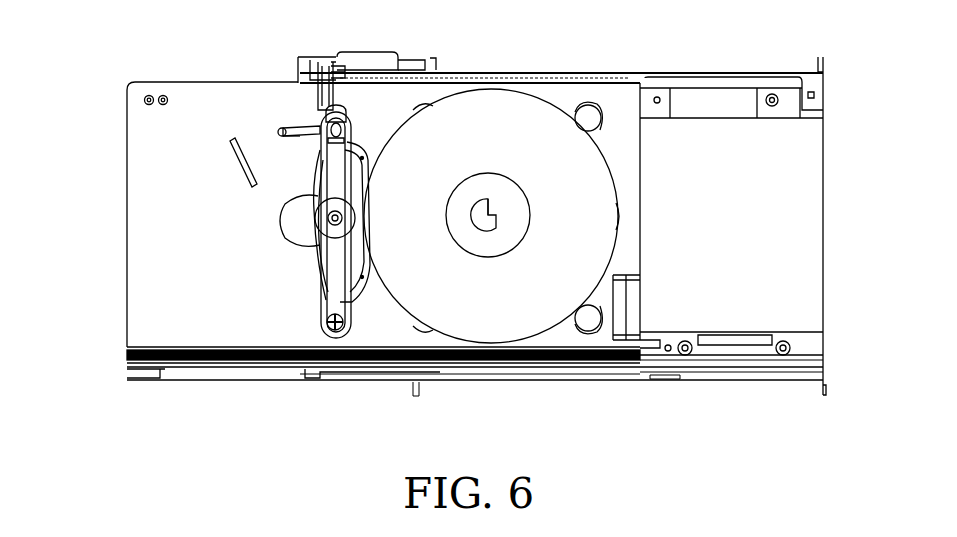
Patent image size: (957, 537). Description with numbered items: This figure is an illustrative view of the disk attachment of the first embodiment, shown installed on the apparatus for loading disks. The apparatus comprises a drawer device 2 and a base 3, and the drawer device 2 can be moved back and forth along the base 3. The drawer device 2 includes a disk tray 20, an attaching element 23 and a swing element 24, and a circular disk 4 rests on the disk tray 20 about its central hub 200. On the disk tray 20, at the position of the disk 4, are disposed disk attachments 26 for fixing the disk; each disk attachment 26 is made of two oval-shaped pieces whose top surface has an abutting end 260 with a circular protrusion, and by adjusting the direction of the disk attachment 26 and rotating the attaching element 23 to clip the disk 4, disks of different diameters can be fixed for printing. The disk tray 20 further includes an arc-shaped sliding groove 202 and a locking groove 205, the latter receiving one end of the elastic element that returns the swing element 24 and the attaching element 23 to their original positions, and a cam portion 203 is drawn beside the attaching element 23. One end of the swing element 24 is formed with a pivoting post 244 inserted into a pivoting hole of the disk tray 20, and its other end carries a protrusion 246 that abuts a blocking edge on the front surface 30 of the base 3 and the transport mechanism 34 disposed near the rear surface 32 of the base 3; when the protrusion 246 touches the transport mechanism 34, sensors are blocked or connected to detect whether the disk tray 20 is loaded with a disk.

The drawer device 2 is at (112, 116).
The base 3 is at (760, 44).
The circular disk 4 is at (498, 140).
The disk tray 20 is at (140, 217).
The attaching element 23 is at (300, 259).
The swing element 24 is at (320, 153).
The disk attachment 26 is at (596, 298).
The front surface 30 is at (823, 100).
The rear surface 32 is at (307, 56).
The transport mechanism 34 is at (364, 55).
The spindle 200 is at (484, 213).
The arc-shaped sliding groove 202 is at (283, 133).
The cam 203 is at (290, 226).
The locking groove 205 is at (237, 169).
The pivoting post 244 is at (328, 324).
The protrusion 246 is at (349, 118).
The abutting end 260 is at (586, 118).